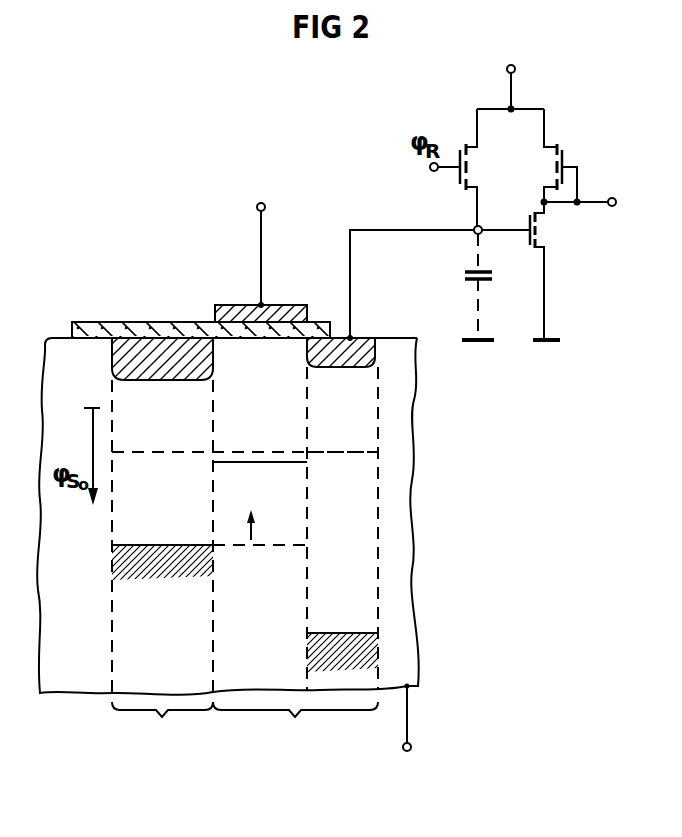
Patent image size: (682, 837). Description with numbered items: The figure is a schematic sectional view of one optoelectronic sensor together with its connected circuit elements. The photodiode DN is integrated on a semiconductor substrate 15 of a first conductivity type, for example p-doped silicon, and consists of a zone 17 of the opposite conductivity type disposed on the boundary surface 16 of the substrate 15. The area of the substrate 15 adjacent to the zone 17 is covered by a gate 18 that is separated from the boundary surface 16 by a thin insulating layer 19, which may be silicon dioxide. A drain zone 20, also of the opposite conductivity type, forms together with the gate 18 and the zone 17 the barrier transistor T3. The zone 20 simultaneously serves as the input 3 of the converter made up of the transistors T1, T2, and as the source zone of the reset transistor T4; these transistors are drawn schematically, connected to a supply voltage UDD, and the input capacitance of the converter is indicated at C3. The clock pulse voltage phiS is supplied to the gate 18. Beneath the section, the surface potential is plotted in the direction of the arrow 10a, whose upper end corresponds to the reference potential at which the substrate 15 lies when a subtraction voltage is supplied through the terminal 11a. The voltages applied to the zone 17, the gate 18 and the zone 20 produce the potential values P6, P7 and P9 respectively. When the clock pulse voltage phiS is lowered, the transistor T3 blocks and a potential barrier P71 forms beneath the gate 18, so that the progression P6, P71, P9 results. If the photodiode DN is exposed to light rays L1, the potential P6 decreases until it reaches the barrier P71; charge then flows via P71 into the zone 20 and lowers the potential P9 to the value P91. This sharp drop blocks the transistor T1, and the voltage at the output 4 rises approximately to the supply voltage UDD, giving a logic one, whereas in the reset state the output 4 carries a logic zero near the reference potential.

The input 3 is at (438, 275).
The output 4 is at (586, 201).
The arrow 10a is at (90, 430).
The terminal 11a is at (429, 739).
The semiconductor substrate 15 is at (412, 412).
The boundary surface 16 is at (395, 338).
The zone 17 is at (160, 370).
The gate 18 is at (272, 305).
The thin insulating layer 19 is at (112, 322).
The drain zone 20 is at (333, 367).
The transistor T1 is at (550, 271).
The transistor T2 is at (565, 155).
The reset transistor T4 is at (465, 159).
The input capacitance C3 is at (492, 287).
The light rays L1 is at (157, 290).
The potential value P6 is at (150, 545).
The potential value P7 is at (245, 545).
The potential barrier P71 is at (265, 462).
The potential value P9 is at (330, 633).
The potential value P91 is at (340, 452).
The photodiode DN is at (162, 731).
The barrier transistor T3 is at (295, 726).
The supply voltage UDD is at (510, 70).
The clock pulse voltage phiS is at (260, 239).